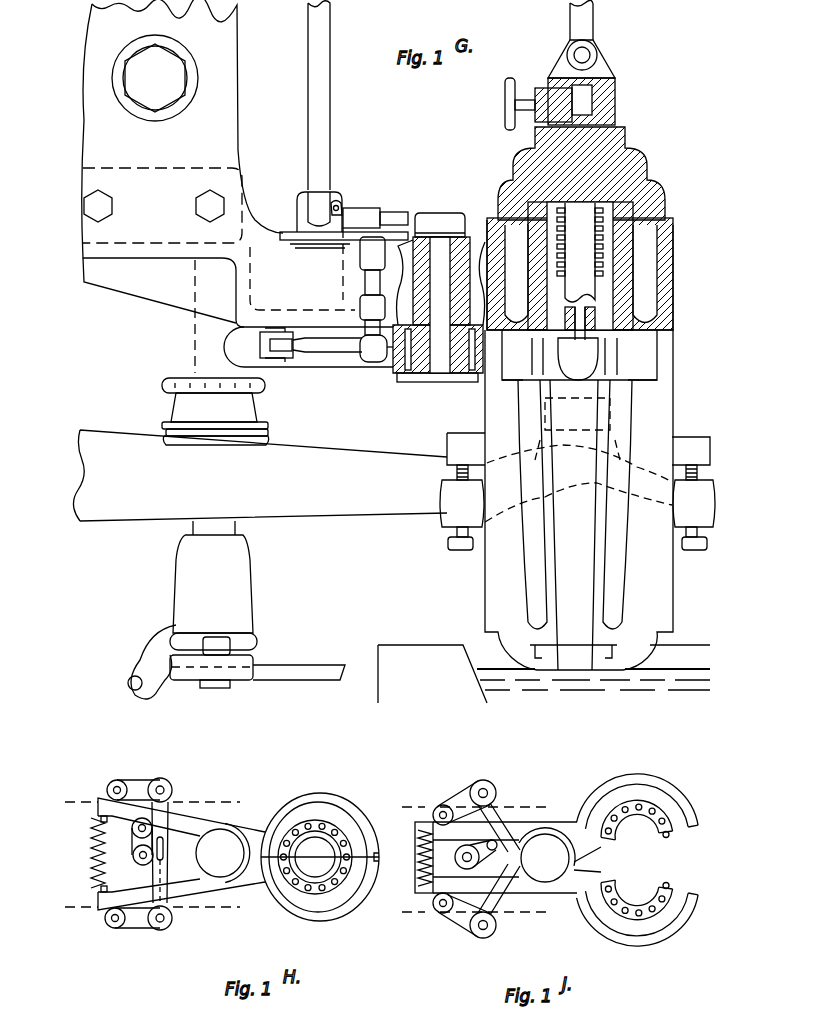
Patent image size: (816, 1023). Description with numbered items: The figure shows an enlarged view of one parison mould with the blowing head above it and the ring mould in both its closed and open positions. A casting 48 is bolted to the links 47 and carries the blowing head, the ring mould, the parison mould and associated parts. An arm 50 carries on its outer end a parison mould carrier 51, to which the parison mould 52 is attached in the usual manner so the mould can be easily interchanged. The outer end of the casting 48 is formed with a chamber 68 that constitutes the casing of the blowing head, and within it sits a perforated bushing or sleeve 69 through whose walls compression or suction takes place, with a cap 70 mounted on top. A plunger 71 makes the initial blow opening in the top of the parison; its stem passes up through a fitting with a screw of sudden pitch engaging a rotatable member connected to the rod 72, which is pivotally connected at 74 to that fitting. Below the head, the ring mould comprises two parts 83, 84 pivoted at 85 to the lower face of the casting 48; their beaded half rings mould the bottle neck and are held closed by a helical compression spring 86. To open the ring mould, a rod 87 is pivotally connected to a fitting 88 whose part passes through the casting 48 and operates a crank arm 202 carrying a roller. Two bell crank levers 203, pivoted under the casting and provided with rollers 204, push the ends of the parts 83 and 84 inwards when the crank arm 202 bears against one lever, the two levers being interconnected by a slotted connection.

In FIG. 1G, the links 47 is at (220, 145).
In FIG. 1G, the casting 48 is at (158, 290).
In FIG. 1G, the arm 50 is at (260, 538).
In FIG. 1G, the parison mould carrier 51 is at (450, 515).
In FIG. 1G, the parison mould 52 is at (490, 590).
In FIG. 1G, the chamber 68 is at (672, 278).
In FIG. 1G, the bushing or sleeve 69 is at (636, 310).
In FIG. 1G, the cap 70 is at (650, 170).
In FIG. 1G, the plunger 71 is at (583, 365).
In FIG. 1G, the rod 72 is at (592, 36).
In FIG. 1G, the pivot 74 is at (586, 57).
In FIG. 1G, the ring mould part 83 is at (406, 332).
In FIG. 1H, the ring mould part 83 is at (340, 800).
In FIG. 1J, the ring mould part 83 is at (668, 792).
In FIG. 1G, the ring mould part 84 is at (386, 366).
In FIG. 1H, the ring mould part 84 is at (324, 921).
In FIG. 1J, the ring mould part 84 is at (643, 930).
In FIG. 1G, the pivot 85 is at (444, 378).
In FIG. 1H, the pivot 85 is at (228, 840).
In FIG. 1J, the pivot 85 is at (550, 848).
In FIG. 1H, the helical compression spring 86 is at (92, 856).
In FIG. 1G, the rod 87 is at (325, 140).
In FIG. 1G, the fitting 88 is at (338, 207).
In FIG. 1G, the crank arm 202 is at (348, 237).
In FIG. 1H, the crank arm 202 is at (132, 840).
In FIG. 1J, the crank arm 202 is at (485, 860).
In FIG. 1G, the bell crank levers 203 is at (325, 352).
In FIG. 1H, the bell crank levers 203 is at (162, 778).
In FIG. 1J, the bell crank levers 203 is at (478, 783).
In FIG. 1G, the rollers 204 is at (262, 345).
In FIG. 1H, the rollers 204 is at (117, 780).
In FIG. 1J, the rollers 204 is at (442, 805).